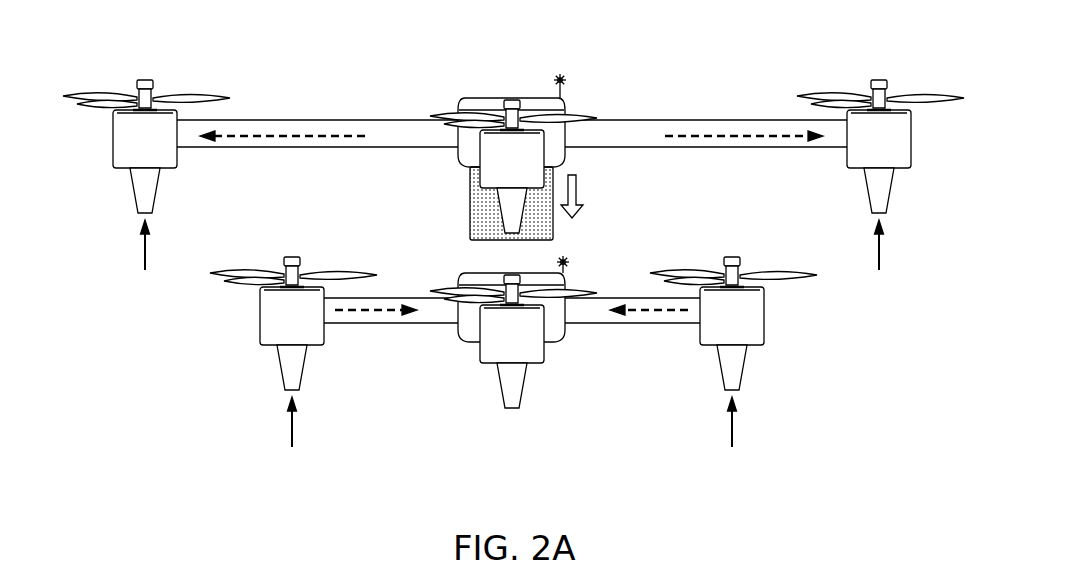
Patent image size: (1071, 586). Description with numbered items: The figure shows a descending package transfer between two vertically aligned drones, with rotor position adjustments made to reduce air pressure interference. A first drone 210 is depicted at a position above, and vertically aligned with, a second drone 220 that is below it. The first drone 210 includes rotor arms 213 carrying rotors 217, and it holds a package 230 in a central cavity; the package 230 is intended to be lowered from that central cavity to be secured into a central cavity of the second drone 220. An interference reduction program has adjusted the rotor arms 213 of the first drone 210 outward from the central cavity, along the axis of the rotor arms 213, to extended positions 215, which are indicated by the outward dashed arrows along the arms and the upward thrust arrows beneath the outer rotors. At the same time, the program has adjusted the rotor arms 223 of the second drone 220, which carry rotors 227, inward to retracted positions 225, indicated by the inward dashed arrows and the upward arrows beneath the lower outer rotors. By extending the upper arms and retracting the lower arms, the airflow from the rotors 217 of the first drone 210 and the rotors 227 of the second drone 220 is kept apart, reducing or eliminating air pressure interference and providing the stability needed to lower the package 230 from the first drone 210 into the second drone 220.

The first drone 210 is at (965, 85).
The rotor arms 213 is at (378, 120).
The extended positions 215 is at (144, 252).
The rotors 217 is at (220, 96).
The package 230 is at (470, 196).
The second drone 220 is at (833, 430).
The rotor arms 223 is at (392, 326).
The retracted positions 225 is at (291, 428).
The rotors 227 is at (241, 277).